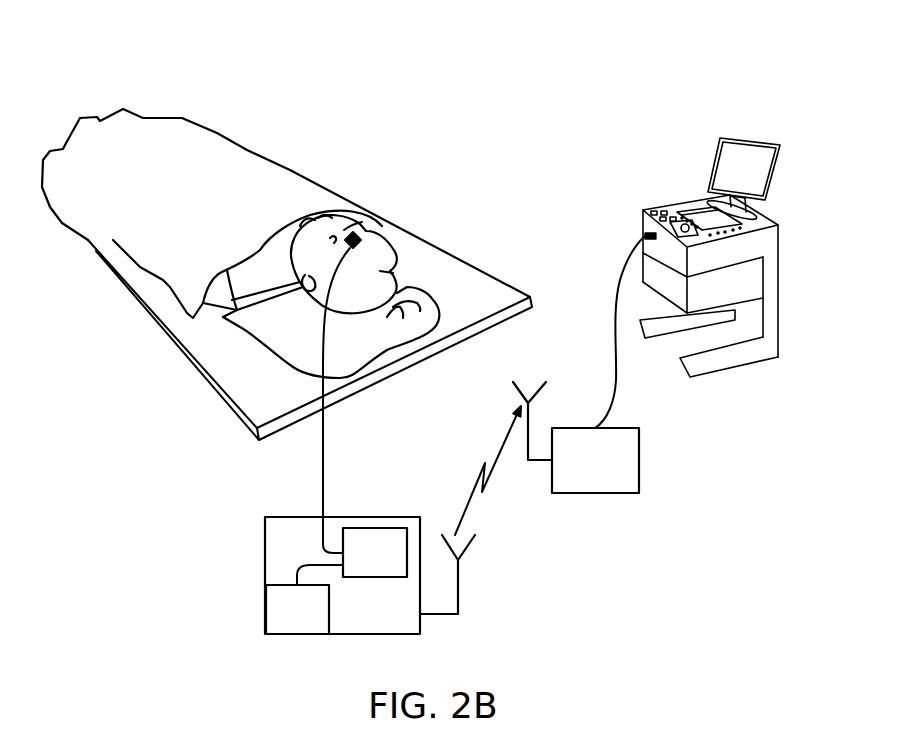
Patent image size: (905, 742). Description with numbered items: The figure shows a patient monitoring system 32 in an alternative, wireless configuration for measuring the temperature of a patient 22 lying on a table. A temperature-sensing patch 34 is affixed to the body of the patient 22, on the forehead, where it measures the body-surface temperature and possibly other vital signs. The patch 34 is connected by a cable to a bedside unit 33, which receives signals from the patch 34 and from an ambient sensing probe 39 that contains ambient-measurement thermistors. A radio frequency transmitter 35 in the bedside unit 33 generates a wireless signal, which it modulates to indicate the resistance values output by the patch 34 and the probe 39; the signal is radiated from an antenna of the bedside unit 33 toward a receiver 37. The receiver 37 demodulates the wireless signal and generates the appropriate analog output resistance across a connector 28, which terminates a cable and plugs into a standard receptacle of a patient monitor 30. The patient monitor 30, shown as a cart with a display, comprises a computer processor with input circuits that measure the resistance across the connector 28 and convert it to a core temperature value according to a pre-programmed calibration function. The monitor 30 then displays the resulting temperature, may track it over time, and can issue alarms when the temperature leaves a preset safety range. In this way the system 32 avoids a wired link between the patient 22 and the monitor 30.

The patient 22 is at (262, 258).
The connector 28 is at (645, 228).
The patient monitor 30 is at (778, 248).
The patient monitoring system 32 is at (743, 205).
The bedside unit 33 is at (265, 550).
The temperature-sensing patch 34 is at (352, 228).
The radio frequency transmitter 35 is at (372, 530).
The receiver 37 is at (597, 493).
The ambient sensing probe 39 is at (266, 627).